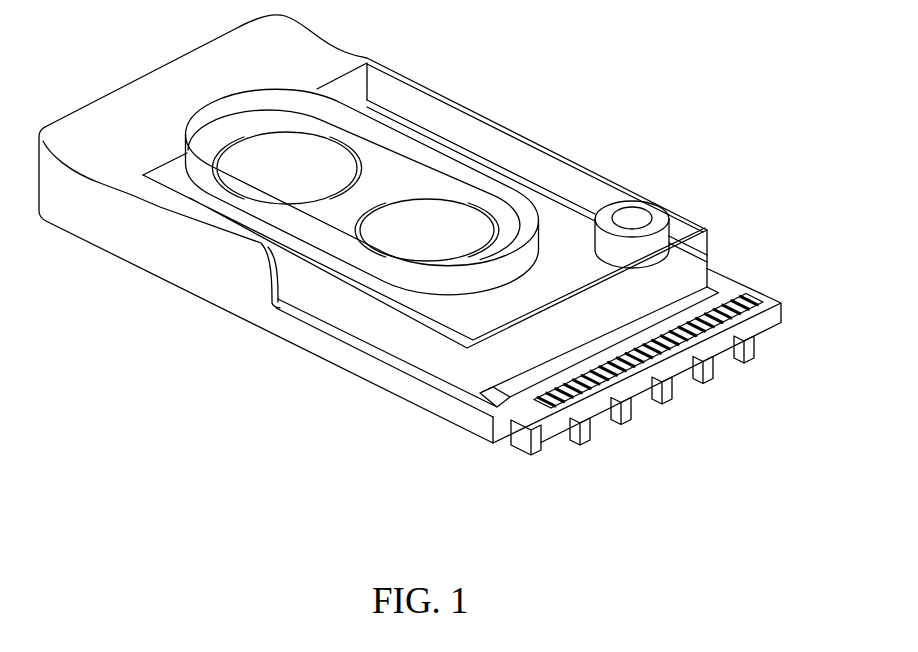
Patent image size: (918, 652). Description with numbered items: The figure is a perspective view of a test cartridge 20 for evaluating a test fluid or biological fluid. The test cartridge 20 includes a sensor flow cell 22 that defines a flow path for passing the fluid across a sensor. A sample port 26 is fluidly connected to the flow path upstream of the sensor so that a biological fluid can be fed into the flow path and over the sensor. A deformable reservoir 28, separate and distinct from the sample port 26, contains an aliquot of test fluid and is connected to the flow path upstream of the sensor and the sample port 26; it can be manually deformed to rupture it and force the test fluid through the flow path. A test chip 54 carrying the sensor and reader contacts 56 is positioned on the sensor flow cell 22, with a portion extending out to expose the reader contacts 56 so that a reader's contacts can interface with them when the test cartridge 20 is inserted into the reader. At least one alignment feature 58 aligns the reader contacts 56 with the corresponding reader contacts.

The test cartridge 20 is at (645, 86).
The sensor flow cell 22 is at (249, 338).
The sample port 26 is at (634, 212).
The deformable reservoir 28 is at (266, 155).
The test chip 54 is at (712, 291).
The reader contact 56 is at (734, 308).
The alignment feature 58 is at (657, 396).